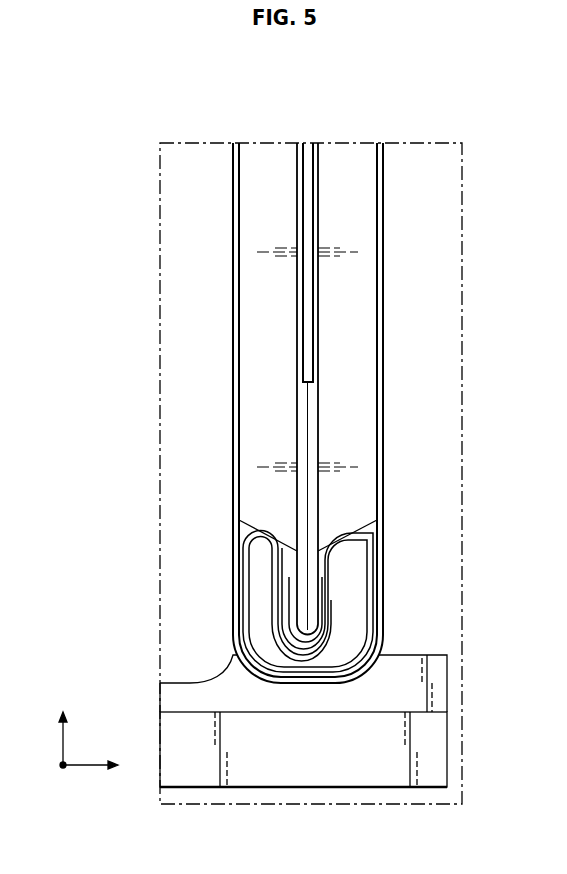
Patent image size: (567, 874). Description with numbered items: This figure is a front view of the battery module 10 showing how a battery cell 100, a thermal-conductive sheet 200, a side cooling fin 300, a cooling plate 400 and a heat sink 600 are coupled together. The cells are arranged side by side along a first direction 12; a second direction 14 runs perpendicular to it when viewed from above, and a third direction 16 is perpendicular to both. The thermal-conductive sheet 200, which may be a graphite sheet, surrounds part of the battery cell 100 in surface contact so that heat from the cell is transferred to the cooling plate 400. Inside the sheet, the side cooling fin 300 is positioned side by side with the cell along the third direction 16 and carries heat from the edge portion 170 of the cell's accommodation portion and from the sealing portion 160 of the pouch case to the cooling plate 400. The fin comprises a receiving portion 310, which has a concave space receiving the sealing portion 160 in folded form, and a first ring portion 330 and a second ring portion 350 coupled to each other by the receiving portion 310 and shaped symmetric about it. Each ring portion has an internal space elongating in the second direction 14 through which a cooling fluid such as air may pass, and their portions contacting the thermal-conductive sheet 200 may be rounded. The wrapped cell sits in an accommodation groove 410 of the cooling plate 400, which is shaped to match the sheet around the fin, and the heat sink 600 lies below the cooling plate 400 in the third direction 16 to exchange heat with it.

The battery module 10 is at (105, 88).
The first direction 12 is at (104, 765).
The second direction 14 is at (63, 765).
The third direction 16 is at (63, 724).
The battery cell 100 is at (355, 370).
The sealing portion 160 is at (288, 577).
The edge portion 170 is at (240, 530).
The thermal-conductive sheet 200 is at (383, 493).
The side cooling fin 300 is at (307, 691).
The receiving portion 310 is at (297, 663).
The first ring portion 330 is at (246, 548).
The second ring portion 350 is at (367, 546).
The cooling plate 400 is at (313, 669).
The accommodation groove 410 is at (177, 680).
The heat sink 600 is at (455, 742).